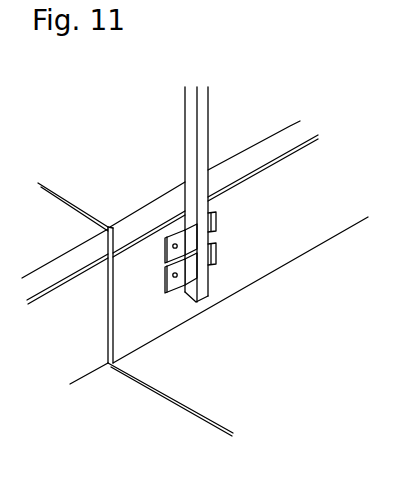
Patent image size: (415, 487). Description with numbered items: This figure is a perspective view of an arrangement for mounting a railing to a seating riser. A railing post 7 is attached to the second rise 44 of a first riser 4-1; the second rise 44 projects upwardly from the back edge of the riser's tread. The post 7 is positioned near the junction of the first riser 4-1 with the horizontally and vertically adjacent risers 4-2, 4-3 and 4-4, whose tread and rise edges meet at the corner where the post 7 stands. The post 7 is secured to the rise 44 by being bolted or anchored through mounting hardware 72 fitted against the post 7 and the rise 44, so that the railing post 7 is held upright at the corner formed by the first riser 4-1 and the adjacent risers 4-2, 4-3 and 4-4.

The railing post 7 is at (190, 113).
The first riser 4-1 is at (188, 374).
The adjacent riser 4-2 is at (137, 189).
The adjacent riser 4-3 is at (55, 242).
The adjacent riser 4-4 is at (81, 346).
The second rise 44 is at (250, 262).
The mounting brackets 72 is at (217, 256).